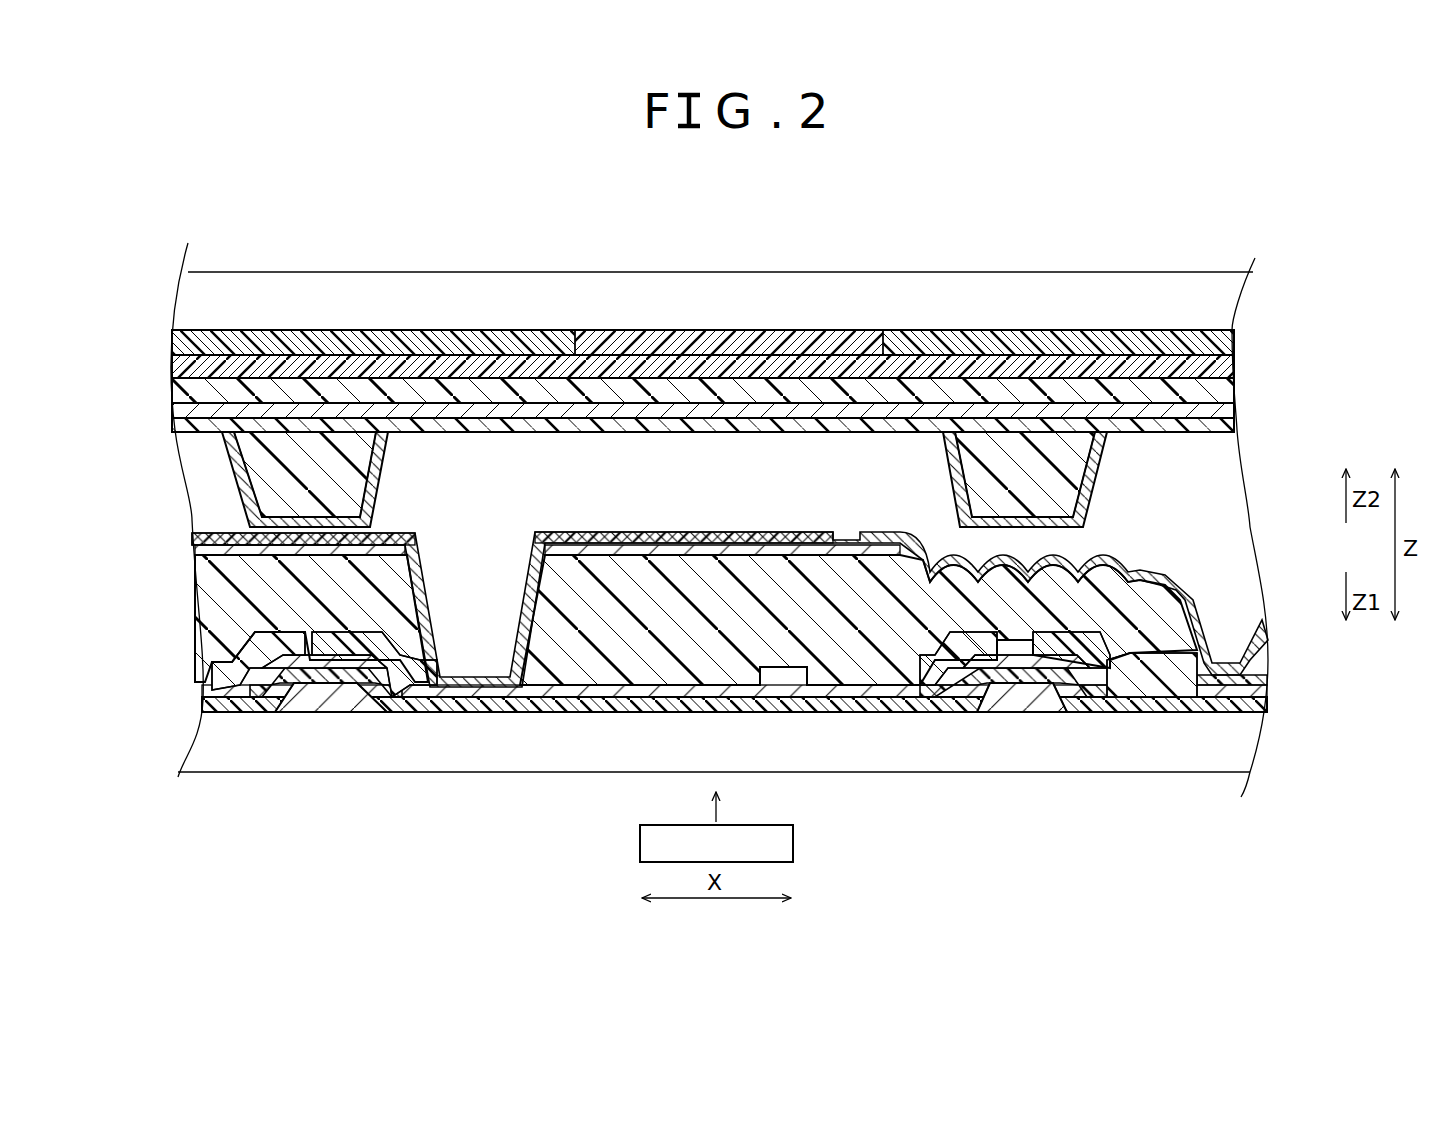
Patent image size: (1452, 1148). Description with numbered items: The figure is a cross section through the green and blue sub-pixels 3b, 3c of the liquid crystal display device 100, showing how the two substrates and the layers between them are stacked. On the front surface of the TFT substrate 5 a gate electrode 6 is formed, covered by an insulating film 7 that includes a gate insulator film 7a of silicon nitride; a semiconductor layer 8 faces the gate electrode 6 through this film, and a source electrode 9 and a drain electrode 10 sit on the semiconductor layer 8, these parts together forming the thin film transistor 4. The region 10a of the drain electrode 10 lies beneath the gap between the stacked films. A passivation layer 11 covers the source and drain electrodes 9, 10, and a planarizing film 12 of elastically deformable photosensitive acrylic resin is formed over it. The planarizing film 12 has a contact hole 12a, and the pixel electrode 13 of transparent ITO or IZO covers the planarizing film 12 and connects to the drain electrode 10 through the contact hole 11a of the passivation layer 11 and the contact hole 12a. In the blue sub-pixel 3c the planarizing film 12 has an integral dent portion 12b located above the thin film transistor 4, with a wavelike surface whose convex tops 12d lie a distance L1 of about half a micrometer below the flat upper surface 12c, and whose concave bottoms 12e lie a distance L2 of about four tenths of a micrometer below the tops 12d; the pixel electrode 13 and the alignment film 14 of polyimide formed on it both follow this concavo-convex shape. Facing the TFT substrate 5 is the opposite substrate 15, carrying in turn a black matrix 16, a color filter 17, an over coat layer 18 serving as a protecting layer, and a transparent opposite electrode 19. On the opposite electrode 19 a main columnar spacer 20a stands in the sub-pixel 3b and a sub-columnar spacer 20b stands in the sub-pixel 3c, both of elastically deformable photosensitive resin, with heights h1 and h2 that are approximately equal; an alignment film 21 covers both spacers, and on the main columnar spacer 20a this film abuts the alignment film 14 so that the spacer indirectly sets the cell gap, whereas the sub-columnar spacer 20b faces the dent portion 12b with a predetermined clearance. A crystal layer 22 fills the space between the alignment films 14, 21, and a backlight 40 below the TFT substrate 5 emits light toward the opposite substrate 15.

The sub-pixel 3b is at (845, 180).
The sub-pixel 3c is at (845, 204).
The liquid crystal display device 100 is at (1254, 226).
The opposite substrate 15 is at (1216, 306).
The black matrix 16 is at (1236, 348).
The color filter 17 is at (1236, 370).
The over coat layer 18 is at (1236, 393).
The opposite electrode 19 is at (1236, 412).
The alignment film 21 is at (1236, 426).
The crystal layer 22 is at (1228, 497).
The main columnar spacer 20a is at (303, 458).
The sub-columnar spacer 20b is at (1031, 447).
The height h1 is at (323, 520).
The height h2 is at (992, 520).
The TFT substrate 5 is at (1250, 740).
The gate electrode 6 is at (360, 705).
The insulating film 7 is at (1228, 703).
The gate insulator film 7a is at (330, 690).
The semiconductor layer 8 is at (305, 665).
The source electrode 9 is at (258, 680).
The drain electrode 10 is at (415, 680).
The drain electrode contact portion 10a is at (495, 690).
The passivation layer 11 is at (1150, 700).
The contact hole 11a is at (488, 680).
The planarizing film 12 is at (215, 645).
The contact hole 12a is at (425, 566).
The dent portion 12b is at (1142, 556).
The flat surface 12c is at (760, 550).
The tops of convex portions 12d is at (925, 550).
The bottoms of concave portions 12e is at (1040, 580).
The pixel electrode 13 is at (691, 550).
The alignment film 14 is at (1253, 654).
The thin film transistor 4 is at (382, 618).
The distance L1 is at (948, 595).
The distance L2 is at (1060, 600).
The backlight 40 is at (795, 845).